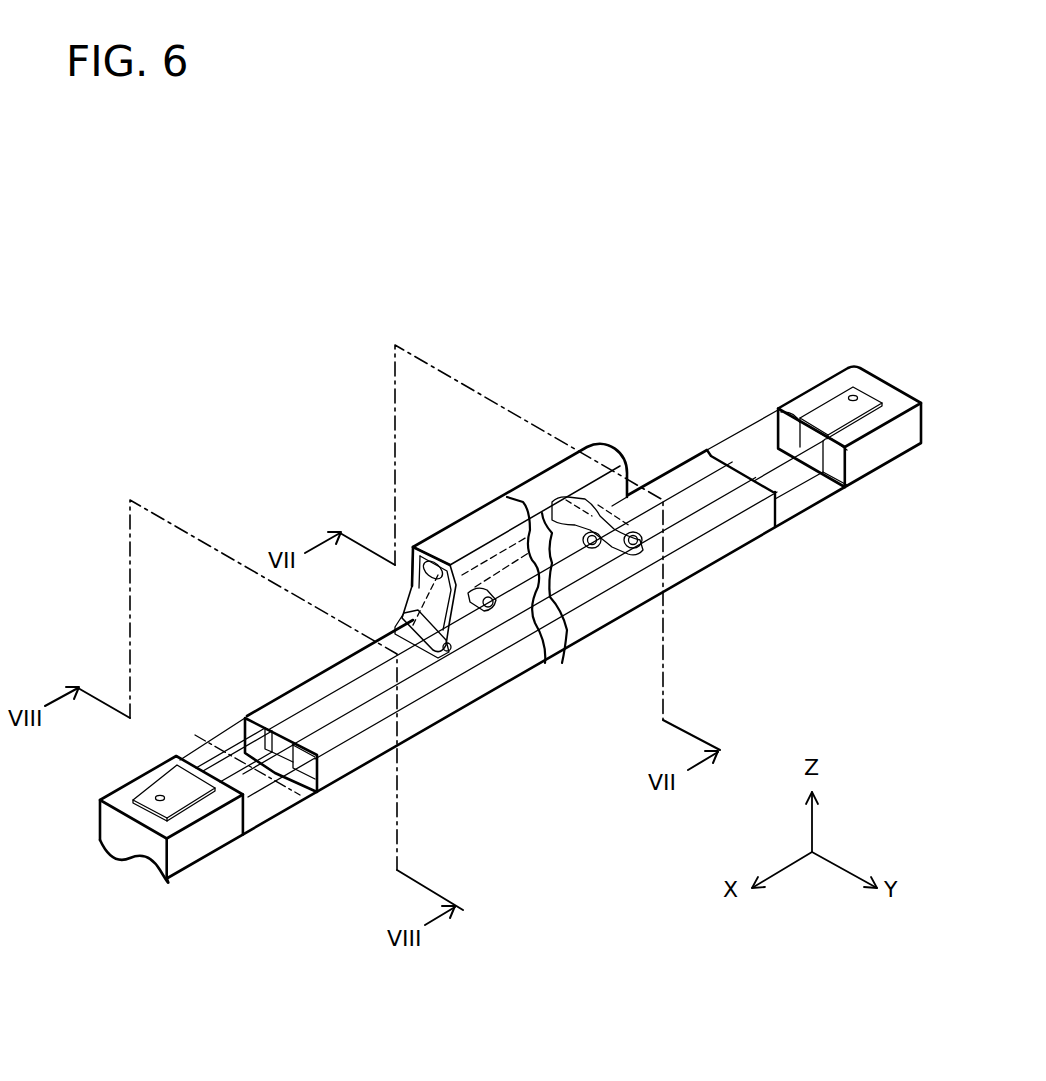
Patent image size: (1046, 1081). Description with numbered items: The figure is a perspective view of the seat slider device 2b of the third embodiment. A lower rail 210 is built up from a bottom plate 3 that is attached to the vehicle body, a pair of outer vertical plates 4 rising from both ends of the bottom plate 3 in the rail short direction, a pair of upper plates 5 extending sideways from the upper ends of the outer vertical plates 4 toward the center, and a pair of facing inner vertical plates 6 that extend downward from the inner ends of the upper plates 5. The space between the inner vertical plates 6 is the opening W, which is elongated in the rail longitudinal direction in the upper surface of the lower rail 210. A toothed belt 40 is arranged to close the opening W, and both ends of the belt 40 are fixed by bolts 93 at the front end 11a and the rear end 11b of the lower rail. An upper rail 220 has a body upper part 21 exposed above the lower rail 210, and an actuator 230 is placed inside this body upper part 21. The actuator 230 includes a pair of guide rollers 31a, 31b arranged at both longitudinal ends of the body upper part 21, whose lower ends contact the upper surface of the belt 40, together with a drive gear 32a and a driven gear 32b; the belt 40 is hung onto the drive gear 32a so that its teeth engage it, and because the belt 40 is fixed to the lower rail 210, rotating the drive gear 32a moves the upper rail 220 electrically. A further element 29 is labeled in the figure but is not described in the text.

The seat slider device 2b is at (731, 265).
The lower rail 210 is at (748, 580).
The upper rail 220 is at (591, 400).
The actuator 230 is at (366, 477).
The body upper part 21 is at (531, 490).
The tab 29 is at (423, 548).
The guide roller 31a is at (398, 625).
The guide roller 31b is at (633, 552).
The drive gear 32a is at (488, 612).
The driven gear 32b is at (592, 550).
The belt 40 is at (330, 696).
The bottom plate 3 is at (263, 775).
The outer vertical plates 4 is at (233, 726).
The upper plates 5 is at (260, 713).
The inner vertical plates 6 is at (275, 750).
The opening W is at (276, 744).
The front end 11a is at (139, 850).
The rear end 11b is at (886, 456).
The bolts 93 is at (158, 798).